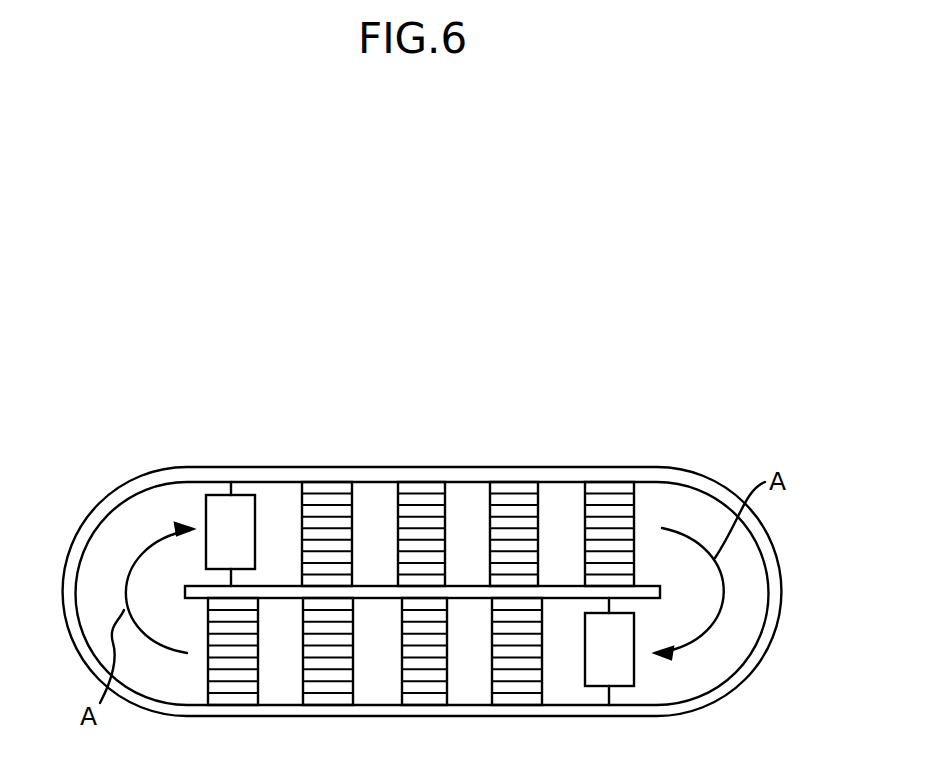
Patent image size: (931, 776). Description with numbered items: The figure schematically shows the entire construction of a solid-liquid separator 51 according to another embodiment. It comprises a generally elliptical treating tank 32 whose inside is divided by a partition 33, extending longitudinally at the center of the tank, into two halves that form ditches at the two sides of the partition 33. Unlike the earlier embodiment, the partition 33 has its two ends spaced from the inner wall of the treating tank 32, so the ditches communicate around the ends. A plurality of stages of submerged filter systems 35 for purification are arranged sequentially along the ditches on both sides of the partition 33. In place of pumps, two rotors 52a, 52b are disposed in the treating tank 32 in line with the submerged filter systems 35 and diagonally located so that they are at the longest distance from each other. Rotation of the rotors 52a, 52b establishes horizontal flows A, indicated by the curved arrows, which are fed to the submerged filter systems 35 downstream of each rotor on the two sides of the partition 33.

The treating tank 32 is at (103, 500).
The solid-liquid separator 51 is at (600, 462).
The partition 33 is at (287, 597).
The submerged filter systems 35 is at (417, 483).
The rotor 52a is at (217, 502).
The rotor 52b is at (623, 678).